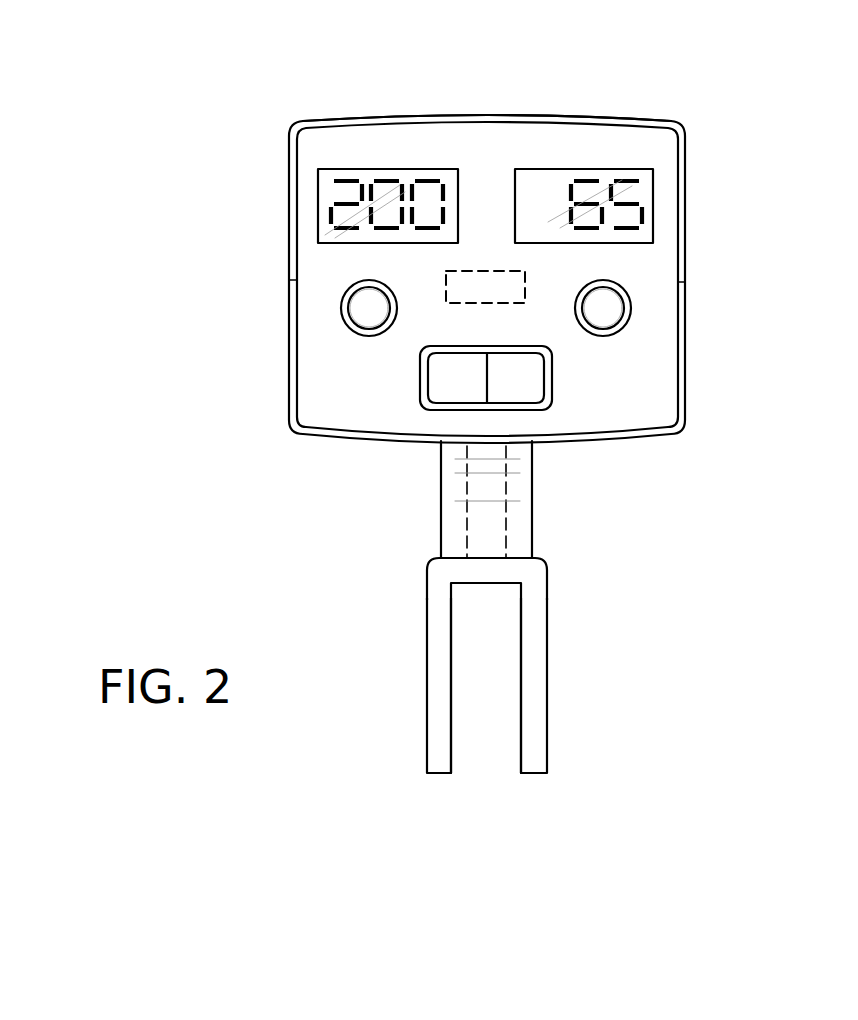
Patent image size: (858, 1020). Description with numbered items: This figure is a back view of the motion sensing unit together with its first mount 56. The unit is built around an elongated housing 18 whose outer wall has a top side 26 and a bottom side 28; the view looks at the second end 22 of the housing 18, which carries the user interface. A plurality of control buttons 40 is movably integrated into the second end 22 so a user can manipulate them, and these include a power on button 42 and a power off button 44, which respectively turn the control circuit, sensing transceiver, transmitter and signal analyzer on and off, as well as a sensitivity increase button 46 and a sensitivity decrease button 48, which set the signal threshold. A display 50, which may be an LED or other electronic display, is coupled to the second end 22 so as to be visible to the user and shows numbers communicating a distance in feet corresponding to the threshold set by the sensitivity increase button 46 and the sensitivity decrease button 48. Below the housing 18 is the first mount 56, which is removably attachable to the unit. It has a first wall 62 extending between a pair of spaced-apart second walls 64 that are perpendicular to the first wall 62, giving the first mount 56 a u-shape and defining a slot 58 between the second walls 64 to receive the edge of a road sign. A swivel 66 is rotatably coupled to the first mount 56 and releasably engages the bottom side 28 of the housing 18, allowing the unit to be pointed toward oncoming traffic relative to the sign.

The housing 18 is at (680, 127).
The second end 22 is at (485, 160).
The top side 26 is at (411, 115).
The bottom side 28 is at (344, 441).
The control buttons 40 is at (428, 445).
The power on button 42 is at (443, 397).
The power off button 44 is at (525, 397).
The sensitivity increase button 46 is at (362, 298).
The sensitivity decrease button 48 is at (612, 308).
The display 50 is at (653, 203).
The first mount 56 is at (530, 702).
The slot 58 is at (480, 722).
The first wall 62 is at (532, 556).
The second walls 64 is at (427, 672).
The swivel 66 is at (532, 500).